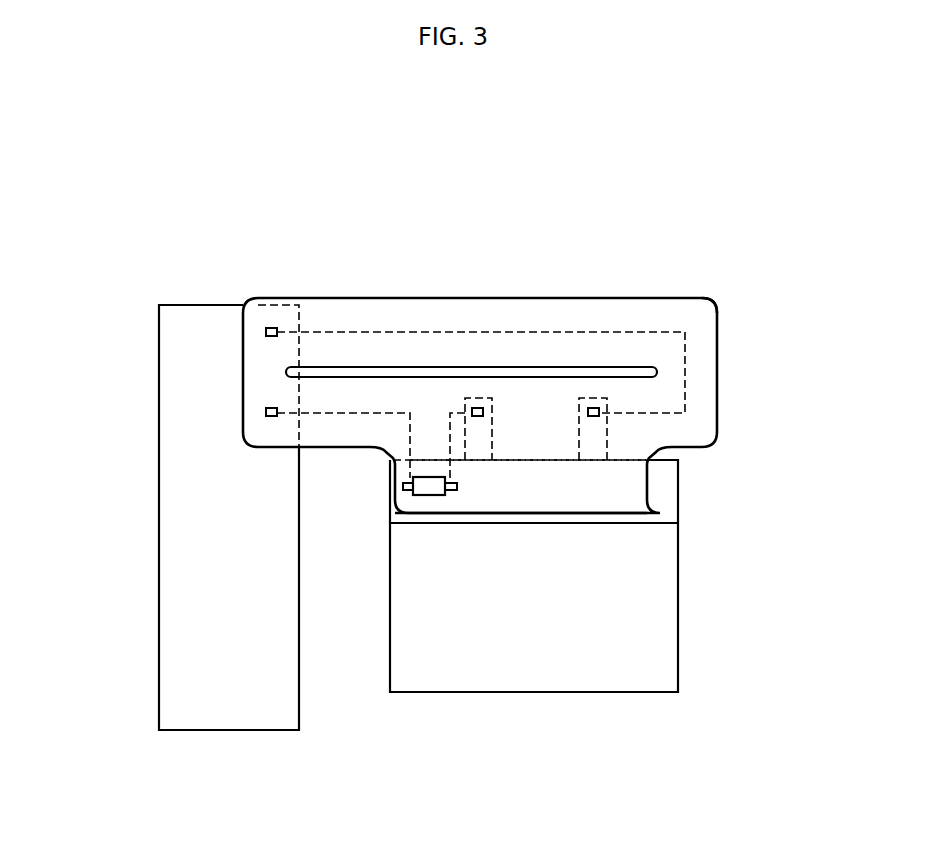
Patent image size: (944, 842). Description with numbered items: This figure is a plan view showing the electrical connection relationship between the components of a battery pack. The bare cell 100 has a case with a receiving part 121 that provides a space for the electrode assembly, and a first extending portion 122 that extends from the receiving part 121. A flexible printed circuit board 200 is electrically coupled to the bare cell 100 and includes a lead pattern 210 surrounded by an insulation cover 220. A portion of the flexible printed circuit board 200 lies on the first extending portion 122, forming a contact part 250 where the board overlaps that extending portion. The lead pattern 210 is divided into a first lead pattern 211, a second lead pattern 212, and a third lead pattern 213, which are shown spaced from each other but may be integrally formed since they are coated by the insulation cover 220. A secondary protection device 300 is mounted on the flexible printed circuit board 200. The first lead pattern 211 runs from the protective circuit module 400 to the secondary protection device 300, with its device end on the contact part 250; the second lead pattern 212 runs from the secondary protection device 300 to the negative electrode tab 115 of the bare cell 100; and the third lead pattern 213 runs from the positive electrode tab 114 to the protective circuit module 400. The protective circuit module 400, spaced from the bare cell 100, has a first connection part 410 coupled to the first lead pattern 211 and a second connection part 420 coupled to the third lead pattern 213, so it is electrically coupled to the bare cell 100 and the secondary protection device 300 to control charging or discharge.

The bare cell 100 is at (584, 634).
The positive electrode tab 114 is at (592, 408).
The negative electrode tab 115 is at (473, 408).
The receiving part 121 is at (665, 617).
The first extending portion 122 is at (665, 496).
The flexible printed circuit board 200 is at (455, 360).
The lead pattern 210 is at (481, 290).
The first lead pattern 211 is at (352, 412).
The second lead pattern 212 is at (448, 433).
The third lead pattern 213 is at (625, 307).
The insulation cover 220 is at (685, 310).
The contact part 250 is at (561, 498).
The secondary protection device 300 is at (428, 496).
The protective circuit module 400 is at (140, 553).
The first connection part 410 is at (269, 408).
The second connection part 420 is at (271, 327).